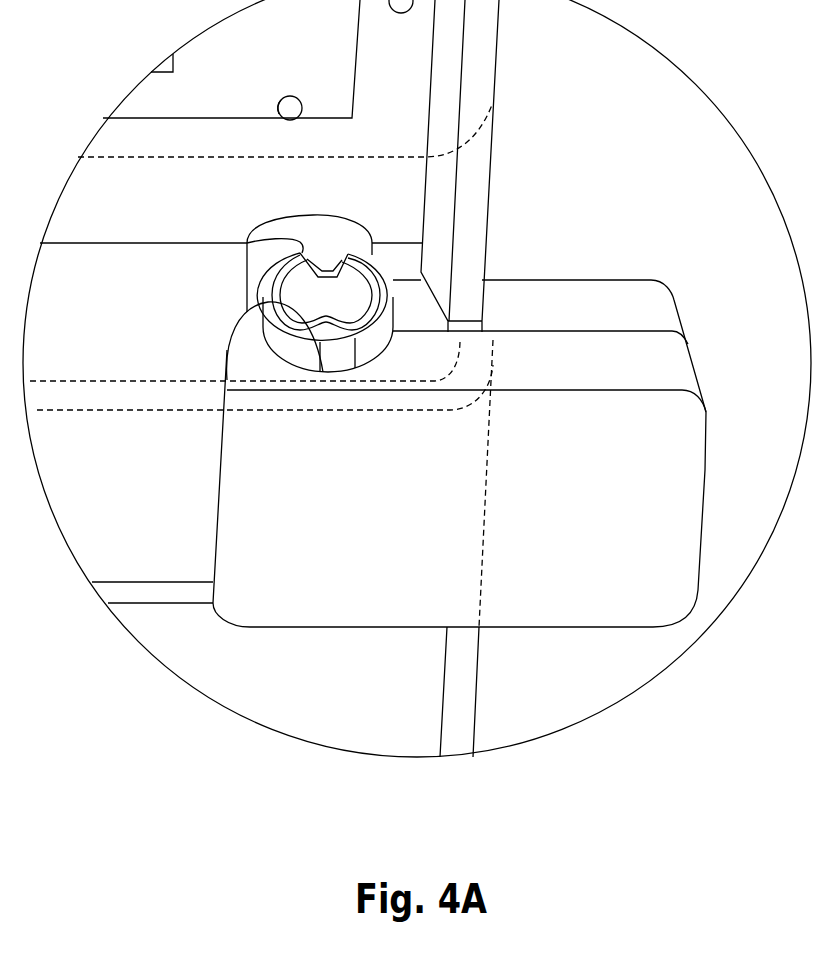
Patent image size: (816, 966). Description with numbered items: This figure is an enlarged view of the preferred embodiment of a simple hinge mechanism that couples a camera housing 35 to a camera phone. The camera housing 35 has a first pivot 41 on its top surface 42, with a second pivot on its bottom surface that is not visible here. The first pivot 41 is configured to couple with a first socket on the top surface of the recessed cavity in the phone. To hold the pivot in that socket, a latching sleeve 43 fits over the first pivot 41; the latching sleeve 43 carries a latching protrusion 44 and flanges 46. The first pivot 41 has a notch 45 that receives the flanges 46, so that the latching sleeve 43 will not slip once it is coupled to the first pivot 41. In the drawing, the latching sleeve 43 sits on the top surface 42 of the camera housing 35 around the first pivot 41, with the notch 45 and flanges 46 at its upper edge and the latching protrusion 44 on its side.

The camera housing 35 is at (523, 607).
The first pivot 41 is at (296, 288).
The top surface 42 is at (576, 297).
The latching sleeve 43 is at (273, 328).
The latching protrusion 44 is at (337, 358).
The notch 45 is at (325, 263).
The flanges 46 is at (272, 238).